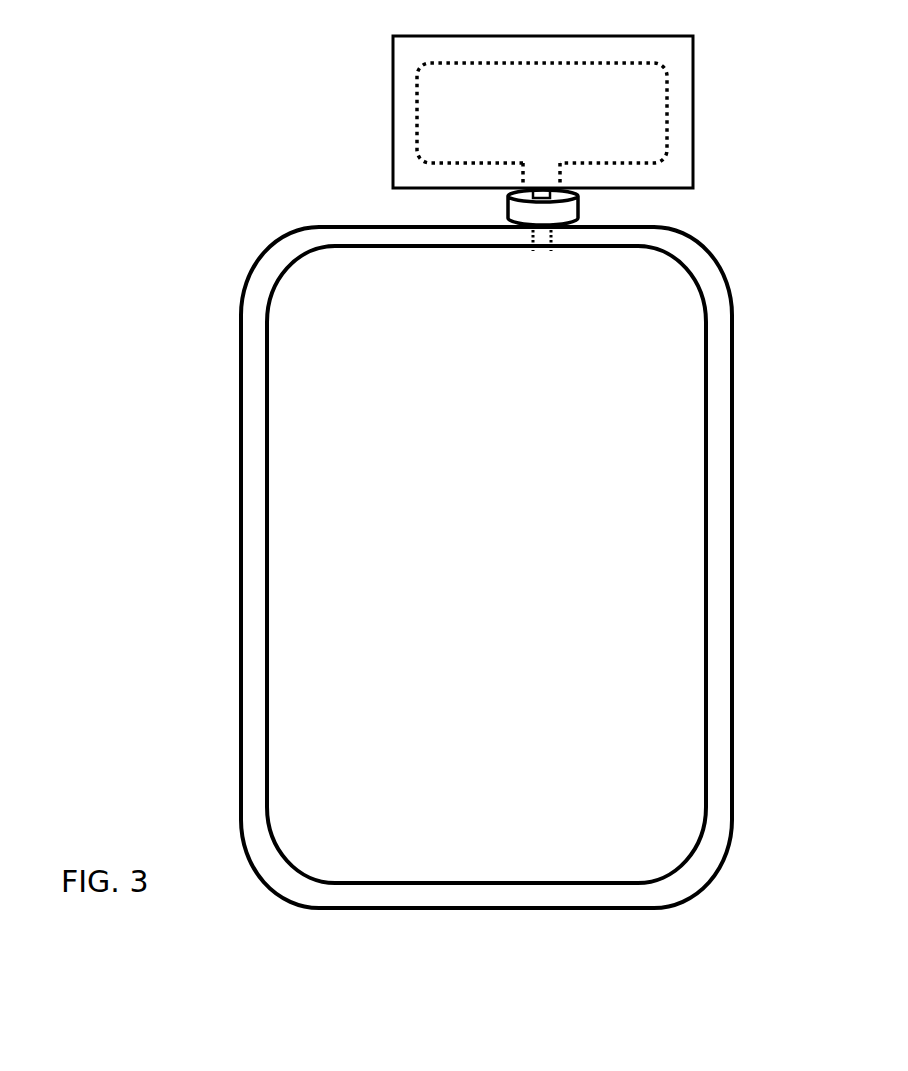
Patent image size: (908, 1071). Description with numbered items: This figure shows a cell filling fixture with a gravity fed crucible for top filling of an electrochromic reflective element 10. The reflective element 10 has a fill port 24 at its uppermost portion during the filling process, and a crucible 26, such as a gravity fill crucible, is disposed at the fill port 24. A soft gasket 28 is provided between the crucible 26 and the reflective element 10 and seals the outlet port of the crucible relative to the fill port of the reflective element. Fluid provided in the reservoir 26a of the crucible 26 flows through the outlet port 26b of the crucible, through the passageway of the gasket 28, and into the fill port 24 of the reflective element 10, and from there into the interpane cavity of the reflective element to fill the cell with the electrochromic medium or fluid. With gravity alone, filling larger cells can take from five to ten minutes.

The electrochromic reflective element 10 is at (212, 425).
The fill port 24 is at (543, 255).
The crucible 26 is at (357, 149).
The reservoir 26a is at (445, 110).
The outlet port 26b is at (548, 172).
The soft gasket 28 is at (587, 207).